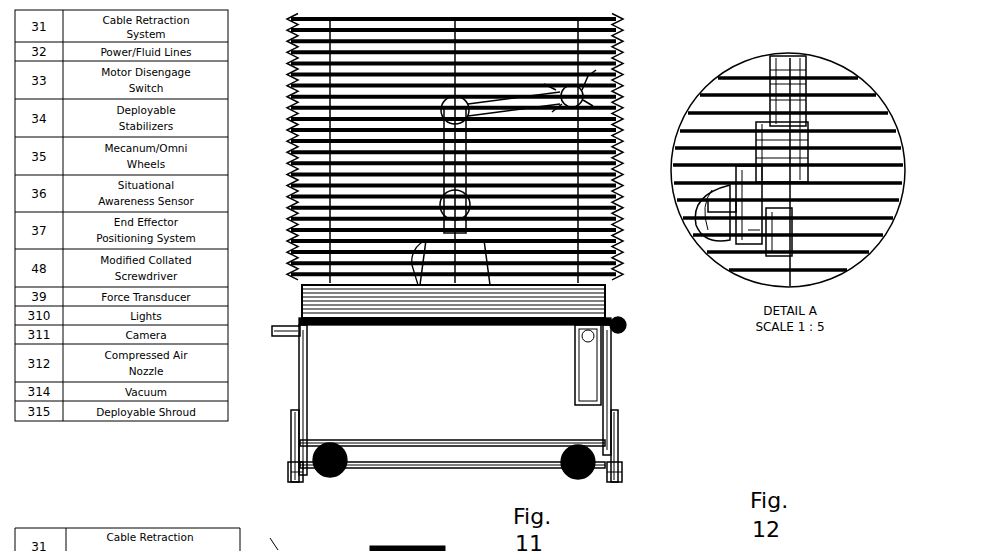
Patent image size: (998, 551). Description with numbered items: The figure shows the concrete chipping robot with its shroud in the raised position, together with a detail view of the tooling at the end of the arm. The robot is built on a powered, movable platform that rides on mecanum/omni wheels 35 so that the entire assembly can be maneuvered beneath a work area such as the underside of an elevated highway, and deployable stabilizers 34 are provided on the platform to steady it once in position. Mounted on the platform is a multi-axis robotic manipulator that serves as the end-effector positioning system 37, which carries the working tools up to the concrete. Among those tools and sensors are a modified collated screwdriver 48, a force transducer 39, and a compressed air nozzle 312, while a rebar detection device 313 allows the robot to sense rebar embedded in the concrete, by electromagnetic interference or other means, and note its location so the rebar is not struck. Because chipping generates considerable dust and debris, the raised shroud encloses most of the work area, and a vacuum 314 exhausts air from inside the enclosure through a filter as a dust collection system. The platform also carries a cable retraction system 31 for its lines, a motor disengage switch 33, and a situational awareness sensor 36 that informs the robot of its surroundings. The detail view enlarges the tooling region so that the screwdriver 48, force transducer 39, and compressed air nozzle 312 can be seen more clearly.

In FIG. 11, the cable retraction system 31 is at (598, 379).
In FIG. 11, the motor disengage switch 33 is at (272, 320).
In FIG. 11, the deployable stabilizers 34 is at (292, 432).
In FIG. 11, the mecanum/omni wheels 35 is at (322, 478).
In FIG. 11, the situational awareness sensor 36 is at (625, 322).
In FIG. 11, the end-effector positioning system 37 is at (287, 54).
In FIG. 12, the modified collated screwdriver 48 is at (806, 158).
In FIG. 12, the force transducer 39 is at (806, 69).
In FIG. 12, the compressed air nozzle 312 is at (704, 92).
In FIG. 11, the rebar detection device 313 is at (289, 232).
In FIG. 11, the vacuum 314 is at (292, 97).